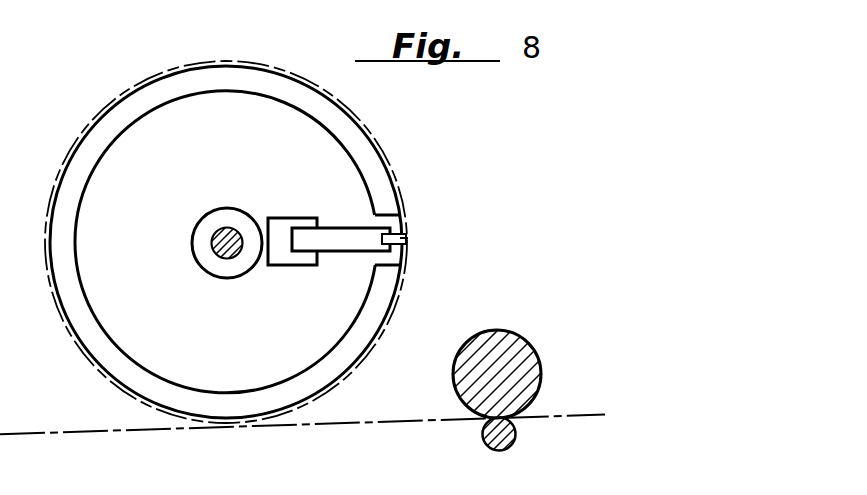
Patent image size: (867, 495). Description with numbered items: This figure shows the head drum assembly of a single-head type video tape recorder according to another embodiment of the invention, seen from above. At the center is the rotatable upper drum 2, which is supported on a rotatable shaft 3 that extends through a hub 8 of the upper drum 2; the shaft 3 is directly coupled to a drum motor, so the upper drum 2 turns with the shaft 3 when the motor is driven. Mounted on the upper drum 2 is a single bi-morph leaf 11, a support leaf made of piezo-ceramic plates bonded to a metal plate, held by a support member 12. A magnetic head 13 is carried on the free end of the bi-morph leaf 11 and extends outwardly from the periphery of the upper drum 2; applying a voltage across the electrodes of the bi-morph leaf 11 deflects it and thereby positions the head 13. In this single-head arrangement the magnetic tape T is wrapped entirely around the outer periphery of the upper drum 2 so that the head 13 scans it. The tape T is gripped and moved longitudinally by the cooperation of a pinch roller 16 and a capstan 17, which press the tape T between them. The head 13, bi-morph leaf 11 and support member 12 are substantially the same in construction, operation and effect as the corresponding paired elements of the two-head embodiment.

The upper drum 2 is at (358, 143).
The rotatable shaft 3 is at (215, 268).
The hub 8 is at (238, 211).
The bi-morph leaf 11 is at (333, 230).
The support member 12 is at (282, 221).
The magnetic head 13 is at (408, 232).
The pinch roller 16 is at (535, 353).
The capstan 17 is at (517, 437).
The magnetic tape T is at (122, 433).